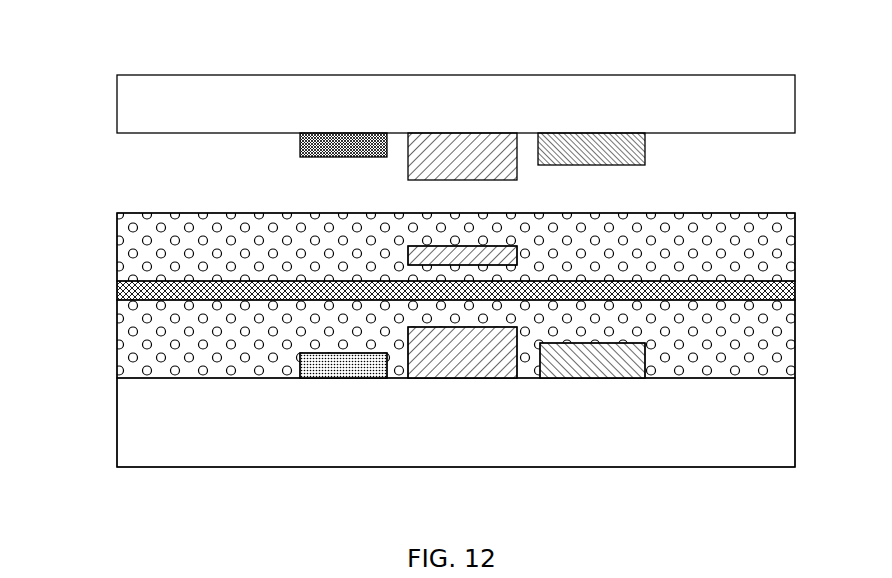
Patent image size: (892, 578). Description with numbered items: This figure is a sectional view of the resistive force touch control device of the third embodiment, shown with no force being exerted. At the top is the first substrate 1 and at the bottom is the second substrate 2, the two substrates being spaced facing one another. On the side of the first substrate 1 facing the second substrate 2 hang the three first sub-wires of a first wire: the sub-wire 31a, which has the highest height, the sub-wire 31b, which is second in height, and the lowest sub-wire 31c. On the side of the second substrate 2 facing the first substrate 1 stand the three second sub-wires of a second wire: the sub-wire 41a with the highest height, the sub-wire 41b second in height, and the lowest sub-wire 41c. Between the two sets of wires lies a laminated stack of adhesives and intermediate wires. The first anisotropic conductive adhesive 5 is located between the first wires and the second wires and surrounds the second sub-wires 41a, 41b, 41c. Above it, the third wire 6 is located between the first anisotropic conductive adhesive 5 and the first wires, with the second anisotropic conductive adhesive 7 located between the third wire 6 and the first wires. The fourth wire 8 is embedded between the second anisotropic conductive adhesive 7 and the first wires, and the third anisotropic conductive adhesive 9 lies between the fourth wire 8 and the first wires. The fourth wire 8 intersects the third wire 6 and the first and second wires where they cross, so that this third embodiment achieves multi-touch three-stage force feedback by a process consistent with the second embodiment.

The first substrate 1 is at (717, 115).
The second substrate 2 is at (722, 422).
The first anisotropic conductive adhesive 5 is at (730, 353).
The third wire 6 is at (773, 288).
The second anisotropic conductive adhesive 7 is at (735, 272).
The fourth wire 8 is at (410, 250).
The third anisotropic conductive adhesive 9 is at (750, 225).
The sub-wire 31a is at (475, 138).
The sub-wire 31b is at (612, 137).
The sub-wire 31c is at (353, 138).
The sub-wire 41a is at (462, 378).
The sub-wire 41b is at (590, 378).
The sub-wire 41c is at (335, 378).